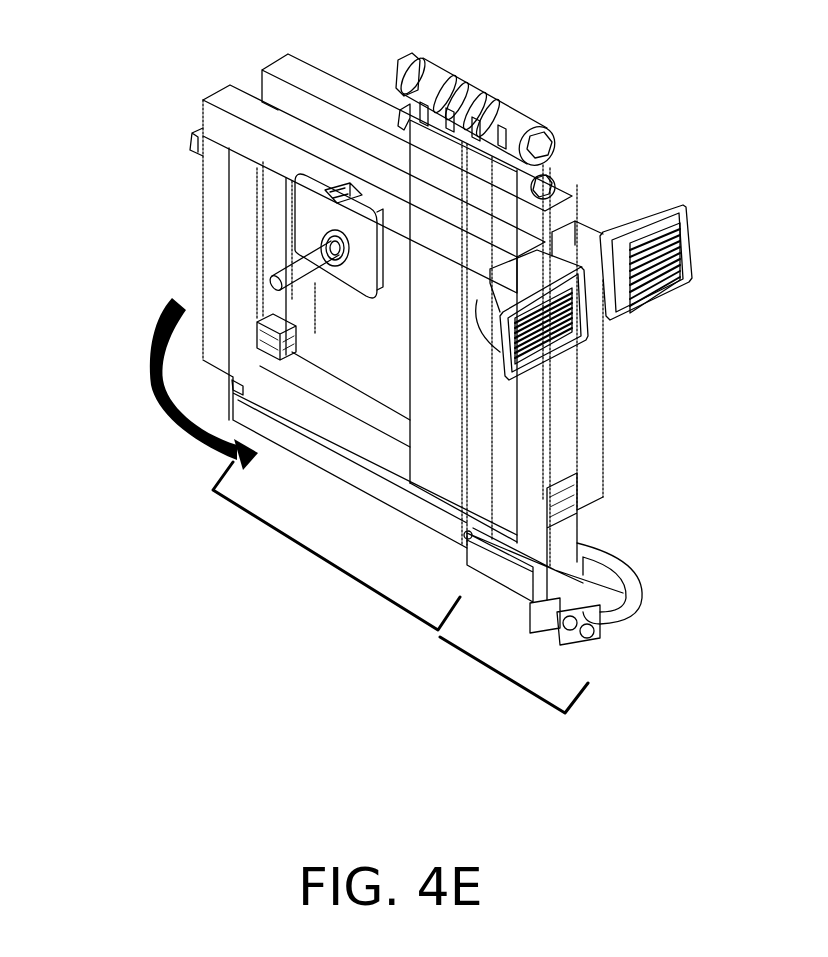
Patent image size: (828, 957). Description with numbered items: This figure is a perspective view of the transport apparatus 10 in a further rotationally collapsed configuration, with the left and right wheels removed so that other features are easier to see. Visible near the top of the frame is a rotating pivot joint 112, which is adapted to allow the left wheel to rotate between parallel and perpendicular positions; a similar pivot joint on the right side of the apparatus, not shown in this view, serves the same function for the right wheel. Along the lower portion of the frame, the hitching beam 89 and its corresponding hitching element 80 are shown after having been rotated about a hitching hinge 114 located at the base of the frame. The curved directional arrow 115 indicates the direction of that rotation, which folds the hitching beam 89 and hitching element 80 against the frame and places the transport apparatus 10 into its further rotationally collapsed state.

The transport apparatus 10 is at (117, 38).
The rotating pivot joint 112 is at (345, 190).
The hitching hinge 114 is at (233, 382).
The directional arrow 115 is at (158, 310).
The hitching beam 89 is at (333, 566).
The hitching element 80 is at (510, 681).